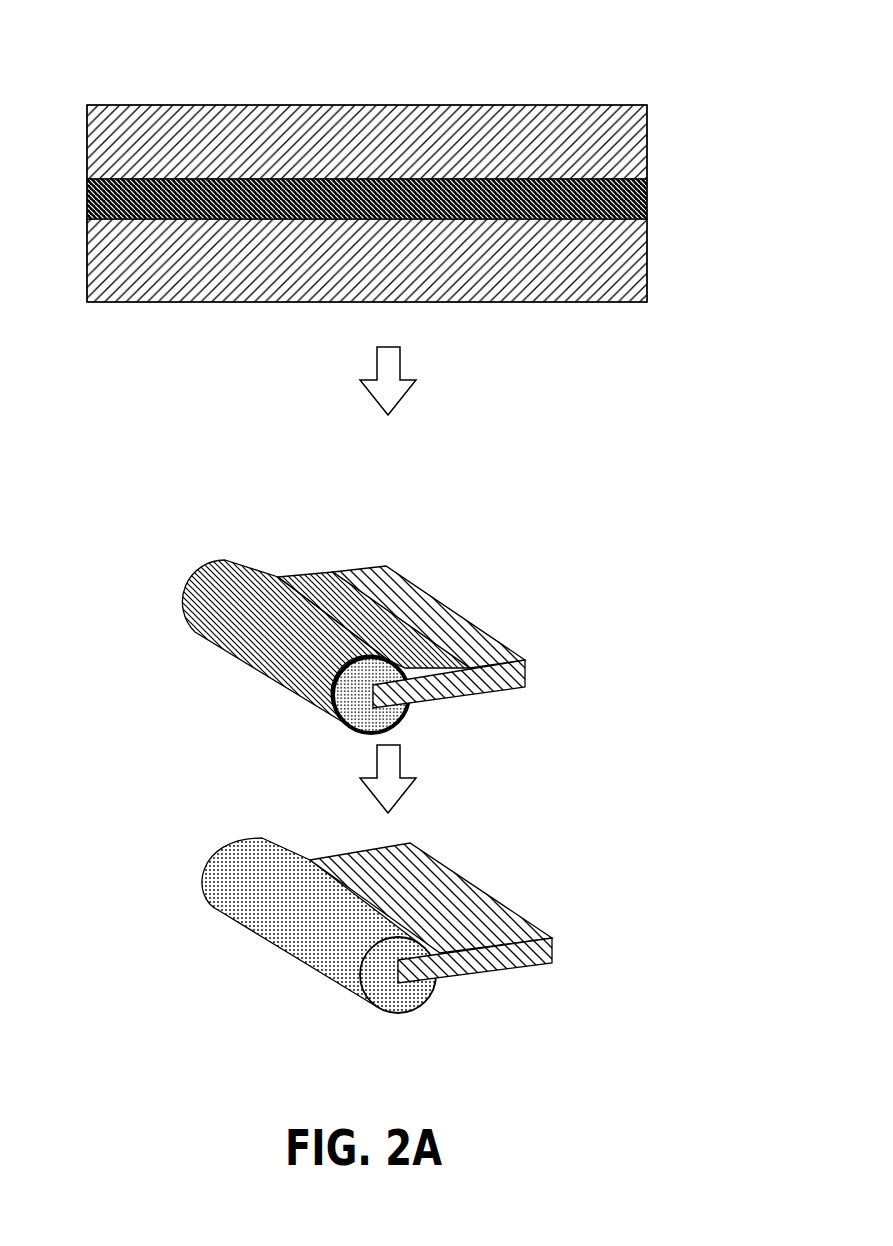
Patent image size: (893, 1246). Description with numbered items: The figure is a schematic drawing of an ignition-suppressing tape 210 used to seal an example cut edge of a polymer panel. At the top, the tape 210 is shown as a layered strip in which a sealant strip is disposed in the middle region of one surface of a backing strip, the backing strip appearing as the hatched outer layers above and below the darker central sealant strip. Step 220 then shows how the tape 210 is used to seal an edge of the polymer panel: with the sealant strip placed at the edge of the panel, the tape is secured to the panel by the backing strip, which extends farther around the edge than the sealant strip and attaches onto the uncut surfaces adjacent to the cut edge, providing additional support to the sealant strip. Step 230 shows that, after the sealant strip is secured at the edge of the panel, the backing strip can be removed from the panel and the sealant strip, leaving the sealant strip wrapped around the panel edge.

The ignition-suppressing tape 210 is at (412, 164).
The step 220 is at (158, 562).
The step 230 is at (178, 860).